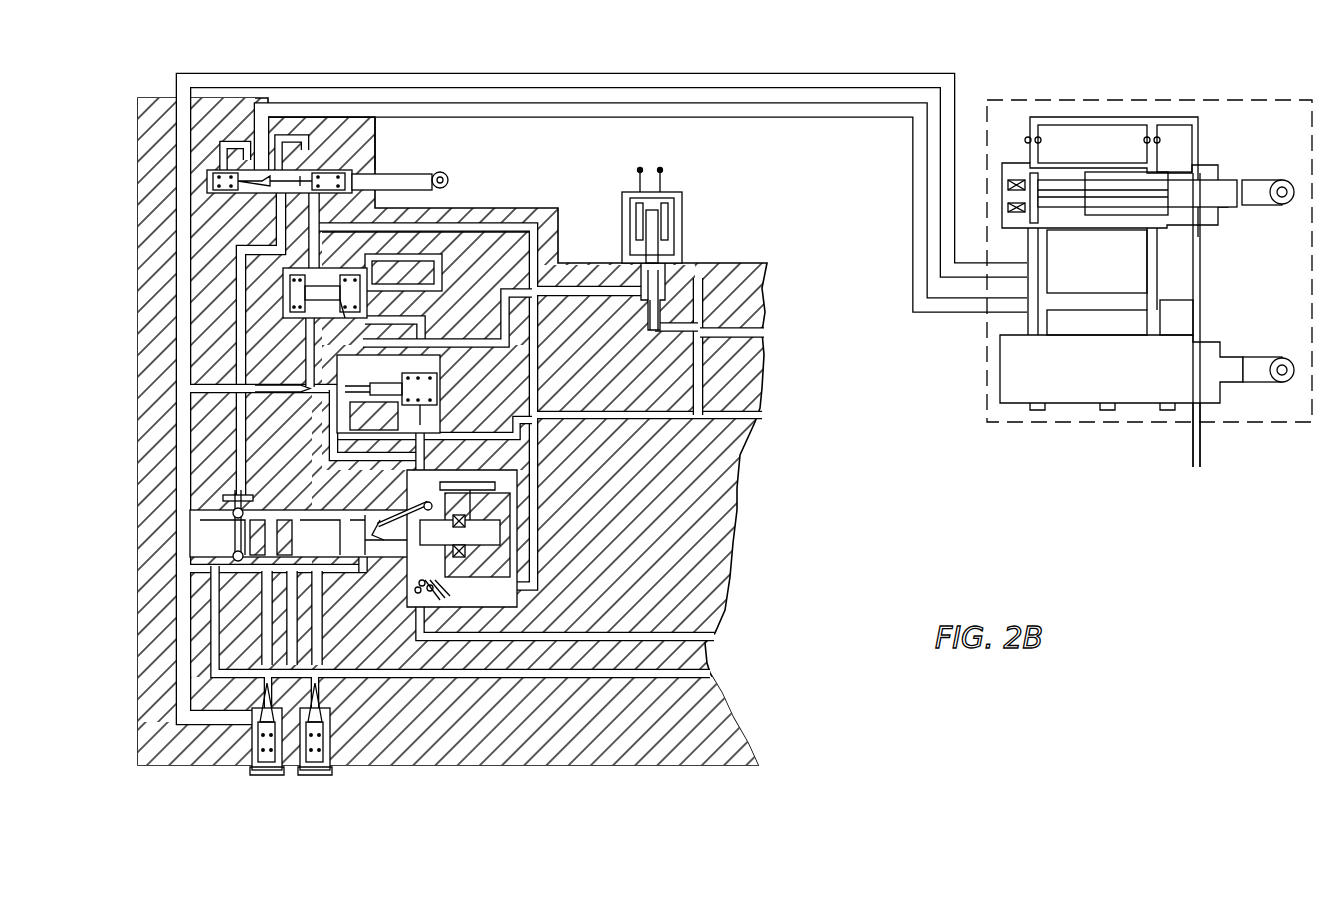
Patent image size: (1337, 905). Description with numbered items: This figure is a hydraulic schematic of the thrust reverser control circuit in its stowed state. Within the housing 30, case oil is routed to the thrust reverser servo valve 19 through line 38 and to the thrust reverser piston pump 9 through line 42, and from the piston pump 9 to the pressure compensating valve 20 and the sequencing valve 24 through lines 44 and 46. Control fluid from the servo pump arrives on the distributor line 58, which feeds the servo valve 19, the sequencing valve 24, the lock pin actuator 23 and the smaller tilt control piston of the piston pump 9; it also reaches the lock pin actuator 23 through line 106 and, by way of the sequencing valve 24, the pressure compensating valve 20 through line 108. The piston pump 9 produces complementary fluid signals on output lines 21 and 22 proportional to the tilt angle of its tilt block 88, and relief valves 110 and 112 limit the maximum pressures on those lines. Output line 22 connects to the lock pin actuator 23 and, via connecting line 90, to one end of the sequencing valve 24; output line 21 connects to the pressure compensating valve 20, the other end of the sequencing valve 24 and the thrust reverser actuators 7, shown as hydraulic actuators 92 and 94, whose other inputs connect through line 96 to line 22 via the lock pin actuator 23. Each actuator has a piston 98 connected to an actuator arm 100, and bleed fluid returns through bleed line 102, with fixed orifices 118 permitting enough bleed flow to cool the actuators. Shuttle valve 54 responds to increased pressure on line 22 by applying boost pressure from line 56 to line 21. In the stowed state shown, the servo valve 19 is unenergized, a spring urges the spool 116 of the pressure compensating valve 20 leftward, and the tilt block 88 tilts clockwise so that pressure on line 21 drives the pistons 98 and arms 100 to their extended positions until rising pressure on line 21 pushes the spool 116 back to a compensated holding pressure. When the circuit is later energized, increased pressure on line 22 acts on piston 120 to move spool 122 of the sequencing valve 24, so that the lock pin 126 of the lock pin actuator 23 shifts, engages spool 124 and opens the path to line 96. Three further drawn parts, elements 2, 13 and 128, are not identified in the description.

The valve 2 is at (333, 550).
The thrust reverser actuators 7 is at (1162, 100).
The thrust reverser piston pump 9 is at (374, 508).
The valve spool 13 is at (485, 488).
The thrust reverser servo valve 19 is at (684, 210).
The pressure compensating valve 20 is at (437, 392).
The output line 21 is at (745, 74).
The output line 22 is at (246, 245).
The lock pin actuator 23 is at (318, 135).
The sequencing valve 24 is at (356, 240).
The housing 30 is at (722, 542).
The line 38 is at (730, 340).
The line 42 is at (603, 632).
The line 44 is at (430, 418).
The line 46 is at (420, 320).
The shuttle valve 54 is at (230, 510).
The line 56 is at (553, 676).
The distributor line 58 is at (615, 420).
The tilt block 88 is at (410, 585).
The connecting line 90 is at (447, 284).
The hydraulic actuator 92 is at (1013, 165).
The hydraulic actuator 94 is at (1212, 345).
The line 96 is at (522, 117).
The piston 98 is at (1095, 232).
The actuator arm 100 is at (1260, 180).
The bleed line 102 is at (1202, 460).
The line 106 is at (540, 356).
The line 108 is at (300, 378).
The relief valve 110 is at (332, 740).
The relief valve 112 is at (250, 748).
The spool 116 is at (374, 405).
The fixed orifices 118 is at (1052, 142).
The piston 120 is at (388, 268).
The spool 122 is at (338, 314).
The spool 124 is at (255, 192).
The lock pin 126 is at (418, 150).
The valve spool 128 is at (275, 304).